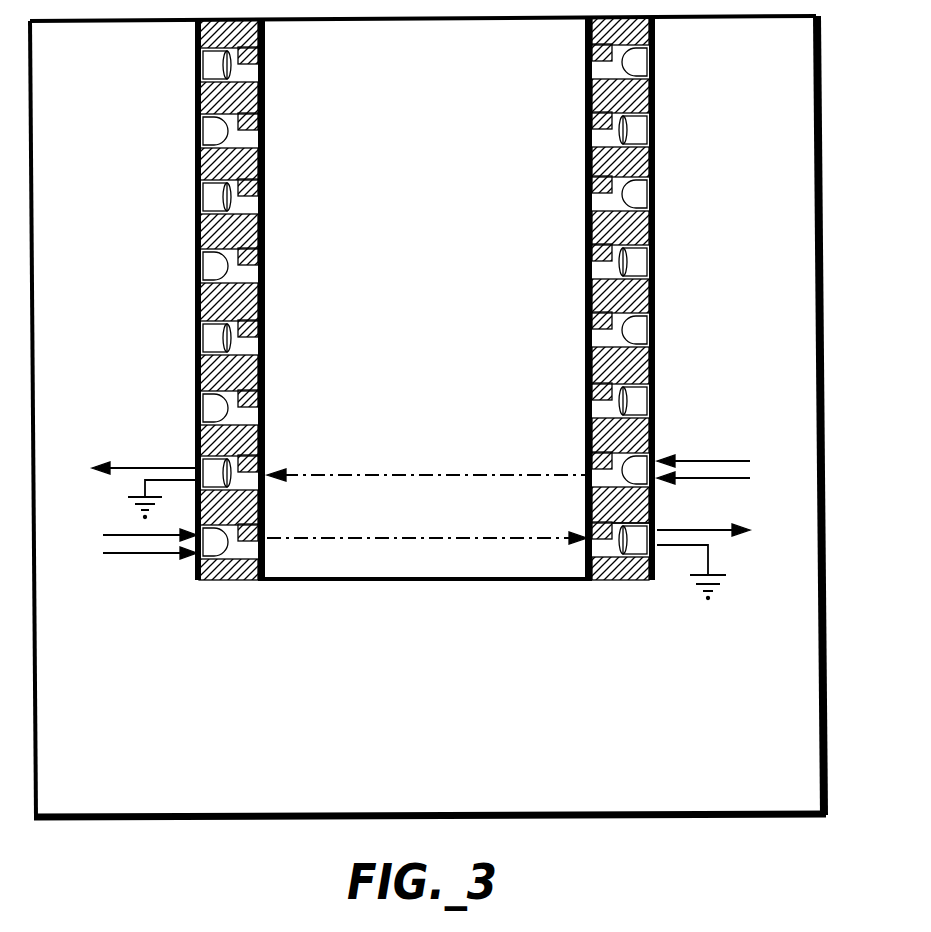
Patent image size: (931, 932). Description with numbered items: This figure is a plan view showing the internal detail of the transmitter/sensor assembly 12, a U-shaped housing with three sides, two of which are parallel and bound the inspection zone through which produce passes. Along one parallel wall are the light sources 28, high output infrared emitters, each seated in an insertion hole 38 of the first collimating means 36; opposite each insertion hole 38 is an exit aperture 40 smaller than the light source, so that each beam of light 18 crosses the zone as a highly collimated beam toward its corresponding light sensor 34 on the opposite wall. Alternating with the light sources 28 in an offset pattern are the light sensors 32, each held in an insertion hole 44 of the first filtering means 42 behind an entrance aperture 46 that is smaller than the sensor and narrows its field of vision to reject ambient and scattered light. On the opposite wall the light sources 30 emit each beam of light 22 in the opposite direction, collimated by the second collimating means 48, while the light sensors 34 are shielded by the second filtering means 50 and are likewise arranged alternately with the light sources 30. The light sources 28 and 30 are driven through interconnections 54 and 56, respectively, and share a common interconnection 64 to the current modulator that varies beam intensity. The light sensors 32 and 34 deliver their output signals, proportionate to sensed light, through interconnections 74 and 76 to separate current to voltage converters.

The transmitter/sensor assembly 12 is at (180, 818).
The beam of light 18 is at (424, 474).
The beam of light 22 is at (427, 537).
The light source 28 is at (640, 460).
The light source 30 is at (205, 558).
The light sensor 32 is at (640, 545).
The light sensor 34 is at (217, 467).
The first collimating means 36 is at (657, 413).
The insertion hole 38 is at (648, 499).
The exit aperture 40 is at (598, 470).
The first filtering means 42 is at (642, 567).
The insertion hole 44 is at (642, 522).
The entrance aperture 46 is at (600, 542).
The second collimating means 48 is at (210, 583).
The second filtering means 50 is at (263, 424).
The interconnections 54 is at (728, 460).
The interconnections 56 is at (123, 535).
The common interconnection 64 is at (115, 557).
The interconnections 74 is at (710, 533).
The interconnections 76 is at (127, 471).